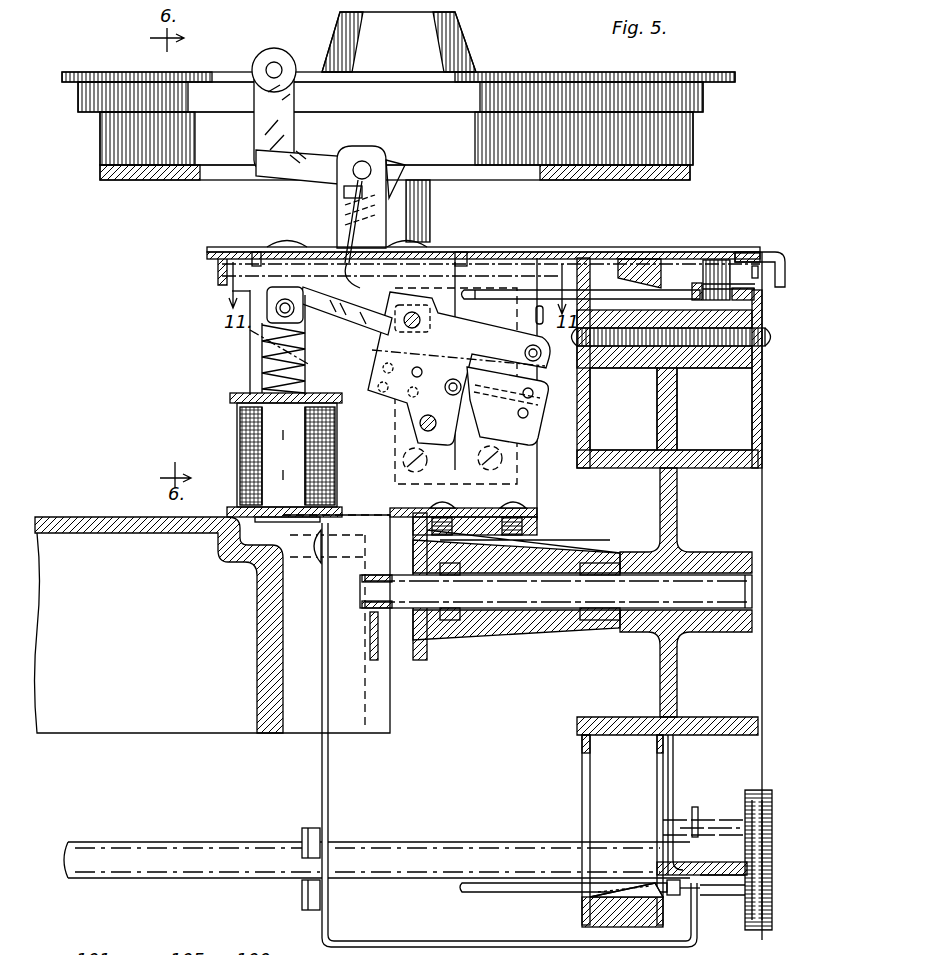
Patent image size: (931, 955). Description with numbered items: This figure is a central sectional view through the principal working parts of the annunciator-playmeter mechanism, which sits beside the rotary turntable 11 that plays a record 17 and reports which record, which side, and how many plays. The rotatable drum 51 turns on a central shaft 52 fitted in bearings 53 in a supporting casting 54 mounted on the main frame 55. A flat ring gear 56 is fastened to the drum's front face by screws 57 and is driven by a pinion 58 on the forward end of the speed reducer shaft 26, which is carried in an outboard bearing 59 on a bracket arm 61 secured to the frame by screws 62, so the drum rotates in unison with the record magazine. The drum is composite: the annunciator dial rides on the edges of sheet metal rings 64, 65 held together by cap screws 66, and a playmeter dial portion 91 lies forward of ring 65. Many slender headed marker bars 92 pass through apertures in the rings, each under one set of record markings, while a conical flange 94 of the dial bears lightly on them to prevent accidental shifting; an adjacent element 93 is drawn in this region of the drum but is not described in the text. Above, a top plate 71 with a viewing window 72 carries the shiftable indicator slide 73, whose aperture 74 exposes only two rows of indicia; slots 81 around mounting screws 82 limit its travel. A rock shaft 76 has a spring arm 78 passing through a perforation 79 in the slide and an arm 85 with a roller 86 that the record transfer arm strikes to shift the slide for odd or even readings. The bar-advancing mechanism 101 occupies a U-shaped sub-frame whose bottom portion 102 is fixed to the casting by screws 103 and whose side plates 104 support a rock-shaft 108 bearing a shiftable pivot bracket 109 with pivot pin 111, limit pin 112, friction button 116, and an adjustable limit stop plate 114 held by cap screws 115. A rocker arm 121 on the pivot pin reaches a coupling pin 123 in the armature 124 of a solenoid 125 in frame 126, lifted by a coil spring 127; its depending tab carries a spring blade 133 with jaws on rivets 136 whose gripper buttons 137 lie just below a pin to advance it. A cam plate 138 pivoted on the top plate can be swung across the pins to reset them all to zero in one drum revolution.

The rotary turntable 11 is at (703, 100).
The record 17 is at (735, 77).
The speed reducer shaft 26 is at (193, 843).
The rotatable drum 51 is at (777, 640).
The central shaft 52 is at (740, 580).
The bearings 53 is at (445, 622).
The supporting casting 54 is at (529, 632).
The main frame 55 is at (86, 517).
The flat ring gear 56 is at (760, 272).
The screws 57 is at (771, 337).
The pinion 58 is at (768, 792).
The outboard bearing 59 is at (697, 828).
The bracket arm 61 is at (458, 941).
The screws 62 is at (313, 553).
The sheet metal ring 64 is at (582, 773).
The sheet metal ring 65 is at (657, 770).
The cap screws 66 is at (632, 368).
The top plate 71 is at (763, 252).
The viewing window 72 is at (726, 258).
The indicator slide 73 is at (566, 250).
The aperture 74 is at (630, 252).
The rock shaft 76 is at (368, 162).
The spring arm 78 is at (350, 220).
The perforation 79 is at (367, 280).
The slots 81 is at (230, 249).
The mounting screws 82 is at (255, 247).
The arm 85 is at (317, 153).
The roller 86 is at (292, 58).
The playmeter dial portion 91 is at (719, 330).
The marker bars 92 is at (697, 283).
The block 93 is at (680, 893).
The conical flange 94 is at (582, 906).
The bar-advancing mechanism 101 is at (217, 370).
The bottom portion 102 is at (407, 508).
The screws 103 is at (538, 502).
The side plates 104 is at (350, 437).
The rock-shaft 108 is at (415, 326).
The shiftable pivot bracket 109 is at (459, 368).
The pivot pin 111 is at (540, 358).
The limit pin 112 is at (423, 426).
The adjustable limit stop plate 114 is at (458, 492).
The cap screws 115 is at (430, 464).
The friction button 116 is at (460, 396).
The rocker arm 121 is at (328, 325).
The coupling pin 123 is at (292, 312).
The armature 124 is at (262, 352).
The electrical solenoid 125 is at (262, 437).
The frame 126 is at (230, 400).
The coil spring 127 is at (312, 368).
The spring blade 133 is at (522, 430).
The rivets 136 is at (530, 412).
The gripper buttons 137 is at (534, 312).
The cam plate 138 is at (757, 294).